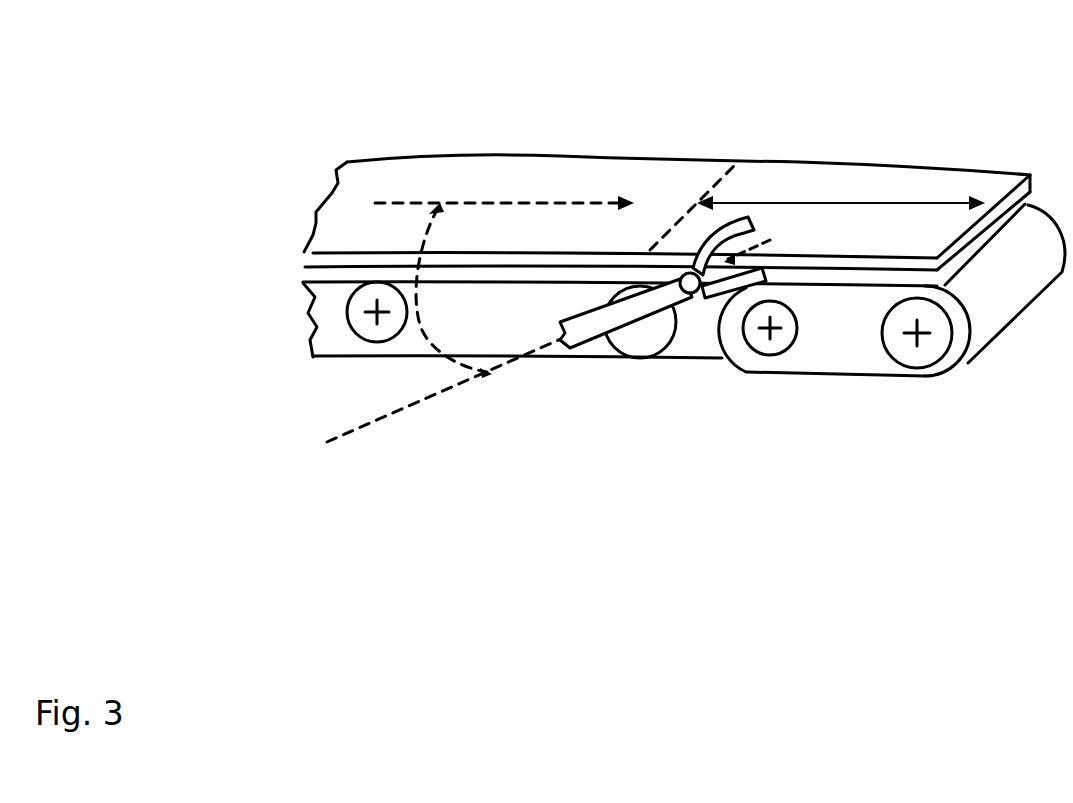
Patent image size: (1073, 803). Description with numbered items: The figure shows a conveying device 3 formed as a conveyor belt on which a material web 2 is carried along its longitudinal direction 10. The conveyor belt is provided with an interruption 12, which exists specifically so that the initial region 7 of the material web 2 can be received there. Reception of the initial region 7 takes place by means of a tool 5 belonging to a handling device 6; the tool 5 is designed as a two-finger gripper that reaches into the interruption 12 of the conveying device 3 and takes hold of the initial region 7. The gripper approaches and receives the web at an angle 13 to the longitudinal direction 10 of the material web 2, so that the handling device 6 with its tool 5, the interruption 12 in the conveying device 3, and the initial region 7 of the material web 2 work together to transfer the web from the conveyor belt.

The material web 2 is at (655, 177).
The conveying device 3 is at (673, 337).
The tool 5 is at (728, 290).
The handling device 6 is at (628, 315).
The initial region 7 is at (840, 203).
The longitudinal direction 10 is at (492, 203).
The interruption 12 is at (703, 354).
The angle 13 is at (420, 322).